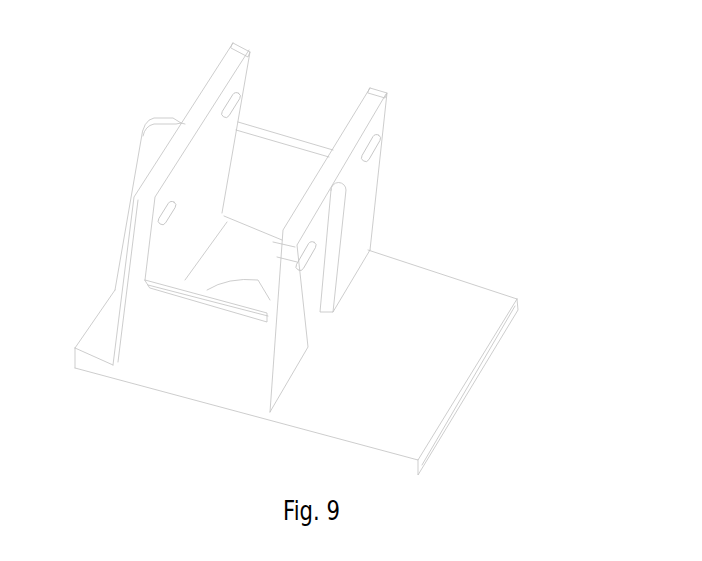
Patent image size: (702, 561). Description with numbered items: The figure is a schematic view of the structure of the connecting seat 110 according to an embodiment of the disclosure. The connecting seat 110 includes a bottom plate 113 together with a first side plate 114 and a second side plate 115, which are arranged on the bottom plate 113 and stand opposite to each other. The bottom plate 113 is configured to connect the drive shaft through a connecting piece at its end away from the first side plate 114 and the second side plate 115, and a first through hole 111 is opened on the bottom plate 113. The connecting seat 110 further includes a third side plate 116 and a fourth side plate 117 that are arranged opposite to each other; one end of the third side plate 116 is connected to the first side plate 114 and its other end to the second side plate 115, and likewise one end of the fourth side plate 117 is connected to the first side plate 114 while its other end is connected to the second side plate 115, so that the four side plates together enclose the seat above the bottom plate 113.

The connecting seat 110 is at (413, 175).
The first through hole 111 is at (253, 290).
The bottom plate 113 is at (465, 345).
The first side plate 114 is at (223, 75).
The second side plate 115 is at (362, 222).
The third side plate 116 is at (258, 158).
The fourth side plate 117 is at (185, 325).